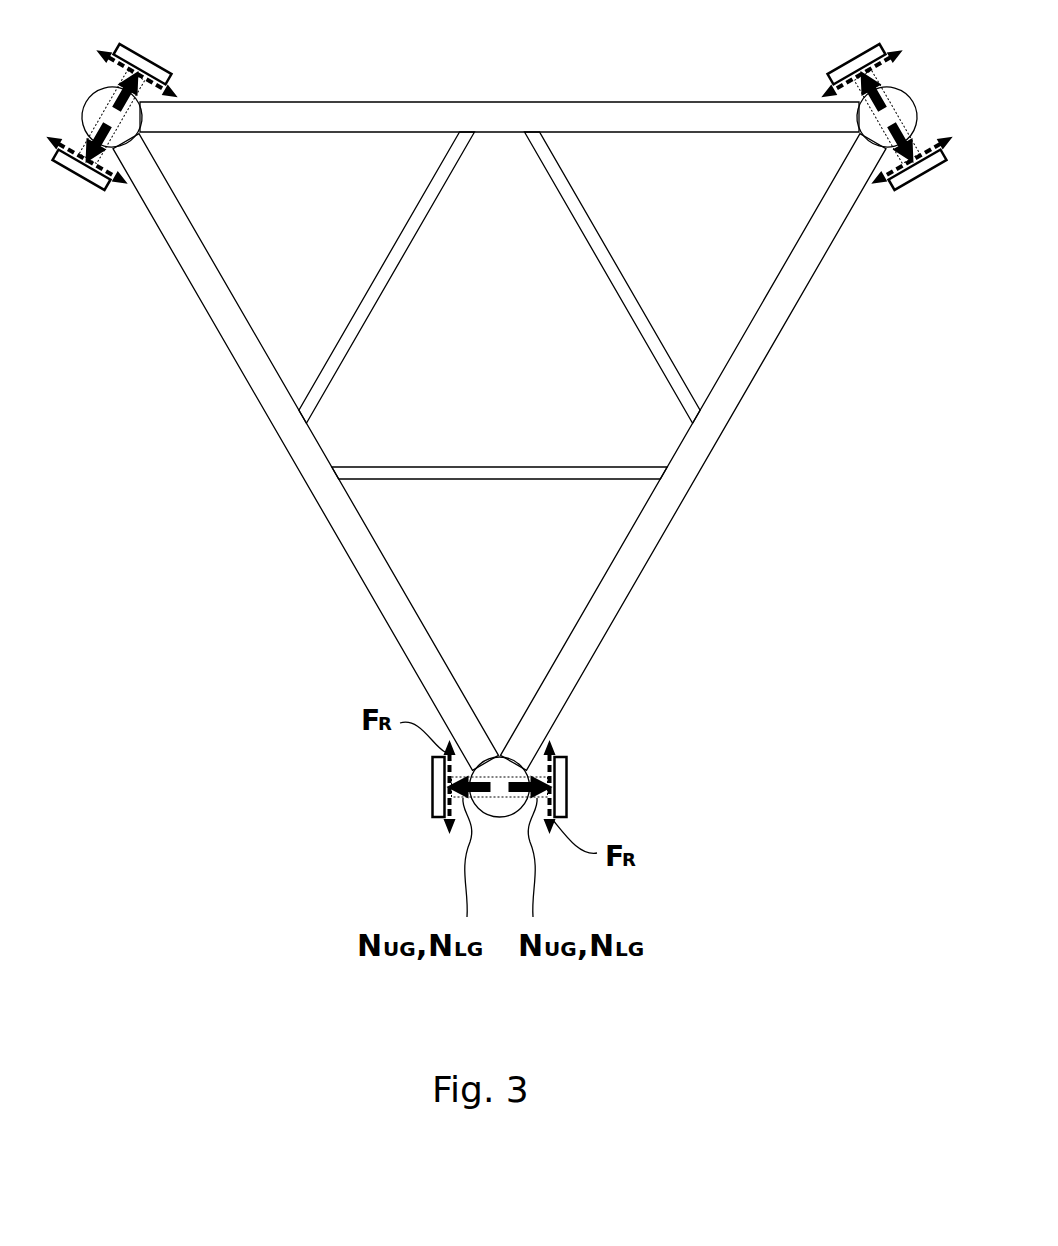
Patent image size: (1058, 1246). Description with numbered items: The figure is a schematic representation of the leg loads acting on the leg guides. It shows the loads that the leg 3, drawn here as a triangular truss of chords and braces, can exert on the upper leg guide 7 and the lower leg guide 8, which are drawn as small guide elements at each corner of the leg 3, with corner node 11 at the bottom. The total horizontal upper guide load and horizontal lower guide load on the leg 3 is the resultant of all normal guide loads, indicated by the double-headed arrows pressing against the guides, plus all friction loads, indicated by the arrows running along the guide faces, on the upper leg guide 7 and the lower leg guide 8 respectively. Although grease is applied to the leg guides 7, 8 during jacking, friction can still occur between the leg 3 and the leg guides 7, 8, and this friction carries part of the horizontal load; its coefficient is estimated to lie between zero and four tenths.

The leg 3 is at (660, 512).
The upper leg guide 7 is at (436, 788).
The lower leg guide 8 is at (563, 788).
The corner joint 11 is at (500, 806).